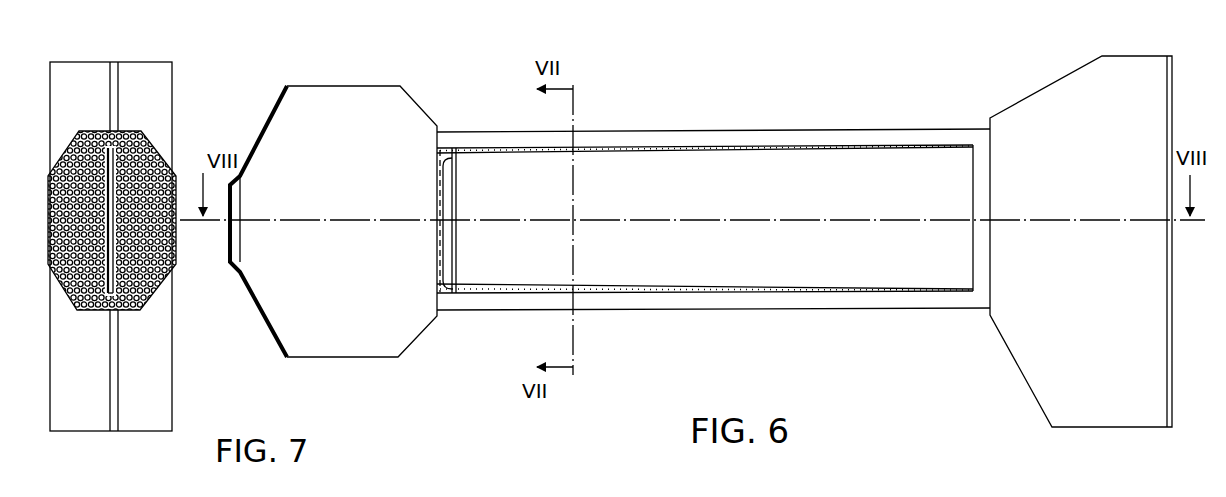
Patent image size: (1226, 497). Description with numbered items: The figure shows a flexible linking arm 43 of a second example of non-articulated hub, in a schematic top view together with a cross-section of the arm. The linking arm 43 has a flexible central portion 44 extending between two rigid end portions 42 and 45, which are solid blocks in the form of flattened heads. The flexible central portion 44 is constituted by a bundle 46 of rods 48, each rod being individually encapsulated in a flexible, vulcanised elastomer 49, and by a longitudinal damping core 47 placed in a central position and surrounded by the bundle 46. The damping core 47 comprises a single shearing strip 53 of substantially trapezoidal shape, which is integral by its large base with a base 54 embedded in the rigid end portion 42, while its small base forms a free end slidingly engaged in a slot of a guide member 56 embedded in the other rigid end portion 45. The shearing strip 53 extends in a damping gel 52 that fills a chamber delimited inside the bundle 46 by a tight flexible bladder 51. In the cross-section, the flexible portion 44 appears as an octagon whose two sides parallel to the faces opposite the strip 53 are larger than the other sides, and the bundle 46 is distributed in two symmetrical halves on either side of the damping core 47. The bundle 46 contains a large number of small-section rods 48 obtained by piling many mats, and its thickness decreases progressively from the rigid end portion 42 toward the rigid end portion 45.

In FIG. 6, the rigid end portion 42 is at (1025, 342).
In FIG. 6, the linking arm 43 is at (827, 104).
In FIG. 6, the flexible central portion 44 is at (782, 310).
In FIG. 7, the rigid end portion 45 is at (78, 80).
In FIG. 6, the rigid end portion 45 is at (332, 110).
In FIG. 7, the bundle 46 is at (162, 279).
In FIG. 6, the bundle 46 is at (608, 138).
In FIG. 7, the damping core 47 is at (112, 300).
In FIG. 6, the damping core 47 is at (628, 297).
In FIG. 7, the rods 48 is at (170, 192).
In FIG. 7, the flexible vulcanised elastomer 49 is at (140, 137).
In FIG. 6, the tight flexible bladder 51 is at (510, 295).
In FIG. 6, the damping gel 52 is at (473, 295).
In FIG. 6, the shearing strip 53 is at (698, 168).
In FIG. 6, the base 54 is at (980, 160).
In FIG. 7, the guide member 56 is at (115, 403).
In FIG. 6, the guide member 56 is at (445, 150).